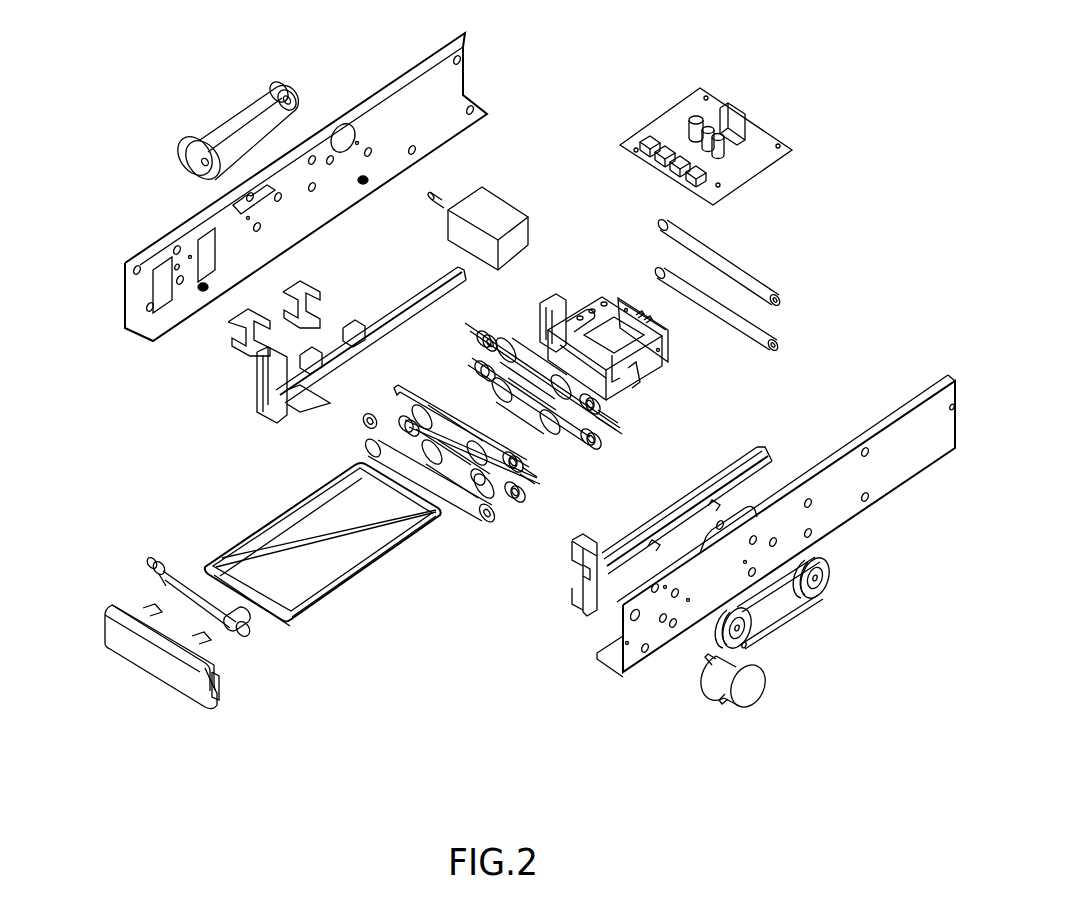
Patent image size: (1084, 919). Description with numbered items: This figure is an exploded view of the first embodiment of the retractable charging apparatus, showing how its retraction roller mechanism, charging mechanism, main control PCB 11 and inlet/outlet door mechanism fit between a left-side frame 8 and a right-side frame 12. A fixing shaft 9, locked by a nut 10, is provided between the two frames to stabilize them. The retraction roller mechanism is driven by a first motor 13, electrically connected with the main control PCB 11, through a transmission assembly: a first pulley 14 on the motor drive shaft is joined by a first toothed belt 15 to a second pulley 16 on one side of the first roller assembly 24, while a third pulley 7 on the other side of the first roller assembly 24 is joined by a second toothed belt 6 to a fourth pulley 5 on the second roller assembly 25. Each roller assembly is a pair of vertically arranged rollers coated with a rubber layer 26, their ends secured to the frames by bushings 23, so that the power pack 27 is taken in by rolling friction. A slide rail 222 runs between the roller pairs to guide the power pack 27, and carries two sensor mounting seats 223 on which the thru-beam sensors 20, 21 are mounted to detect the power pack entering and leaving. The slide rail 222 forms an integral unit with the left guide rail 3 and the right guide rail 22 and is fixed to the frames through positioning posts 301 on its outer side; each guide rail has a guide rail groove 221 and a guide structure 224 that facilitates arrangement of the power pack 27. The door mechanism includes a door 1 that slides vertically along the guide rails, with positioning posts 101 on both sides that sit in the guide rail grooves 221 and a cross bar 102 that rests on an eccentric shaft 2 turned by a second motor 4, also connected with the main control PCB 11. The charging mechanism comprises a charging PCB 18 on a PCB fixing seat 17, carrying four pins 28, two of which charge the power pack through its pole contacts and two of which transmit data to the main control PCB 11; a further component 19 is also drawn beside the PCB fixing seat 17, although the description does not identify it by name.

The door 1 is at (149, 655).
The positioning posts 101 is at (216, 712).
The cross bar 102 is at (200, 643).
The eccentric shaft 2 is at (145, 552).
The left guide rail 3 is at (614, 531).
The positioning posts 301 is at (650, 542).
The second motor 4 is at (757, 705).
The fourth pulley 5 is at (742, 638).
The second toothed belt 6 is at (800, 616).
The third pulley 7 is at (828, 592).
The left-side frame 8 is at (842, 532).
The fixing shaft 9 is at (775, 279).
The nut 10 is at (782, 297).
The main control PCB 11 is at (745, 168).
The right-side frame 12 is at (462, 81).
The first motor 13 is at (535, 236).
The first pulley 14 is at (297, 70).
The first toothed belt 15 is at (237, 115).
The second pulley 16 is at (182, 148).
The PCB fixing seat 17 is at (688, 319).
The charging PCB 18 is at (692, 357).
The sensor block 19 is at (586, 310).
The thru-beam sensor 20 is at (318, 284).
The thru-beam sensor 21 is at (250, 347).
The right guide rail 22 is at (331, 359).
The guide rail groove 221 is at (263, 392).
The slide rail 222 is at (375, 398).
The sensor mounting seats 223 is at (355, 320).
The guide structure 224 is at (345, 419).
The bushings 23 is at (363, 426).
The first roller assembly 24 is at (608, 428).
The second roller assembly 25 is at (490, 462).
The rubber layer 26 is at (578, 391).
The power pack 27 is at (297, 563).
The pins 28 is at (648, 330).